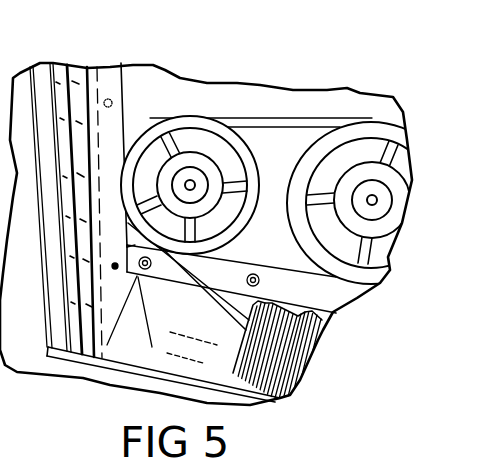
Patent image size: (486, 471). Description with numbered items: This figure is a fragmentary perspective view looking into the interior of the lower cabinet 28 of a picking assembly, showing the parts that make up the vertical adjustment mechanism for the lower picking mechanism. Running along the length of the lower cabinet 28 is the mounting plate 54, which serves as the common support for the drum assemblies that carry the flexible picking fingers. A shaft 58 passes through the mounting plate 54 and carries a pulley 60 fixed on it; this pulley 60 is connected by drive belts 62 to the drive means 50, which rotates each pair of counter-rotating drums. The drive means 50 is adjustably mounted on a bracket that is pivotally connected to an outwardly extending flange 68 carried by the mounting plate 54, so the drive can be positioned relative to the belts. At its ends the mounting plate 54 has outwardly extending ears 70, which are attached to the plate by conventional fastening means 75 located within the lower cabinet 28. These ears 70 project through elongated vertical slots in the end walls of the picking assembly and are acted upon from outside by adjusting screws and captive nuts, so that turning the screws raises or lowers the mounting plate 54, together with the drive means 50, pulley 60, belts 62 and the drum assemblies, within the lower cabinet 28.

The lower cabinet 28 is at (361, 112).
The drive means 50 is at (303, 340).
The mounting plate 54 is at (140, 85).
The shaft 58 is at (201, 186).
The pulley 60 is at (198, 128).
The drive belts 62 is at (292, 125).
The outwardly extending flange 68 is at (199, 329).
The ears 70 is at (107, 80).
The fastening means 75 is at (113, 101).